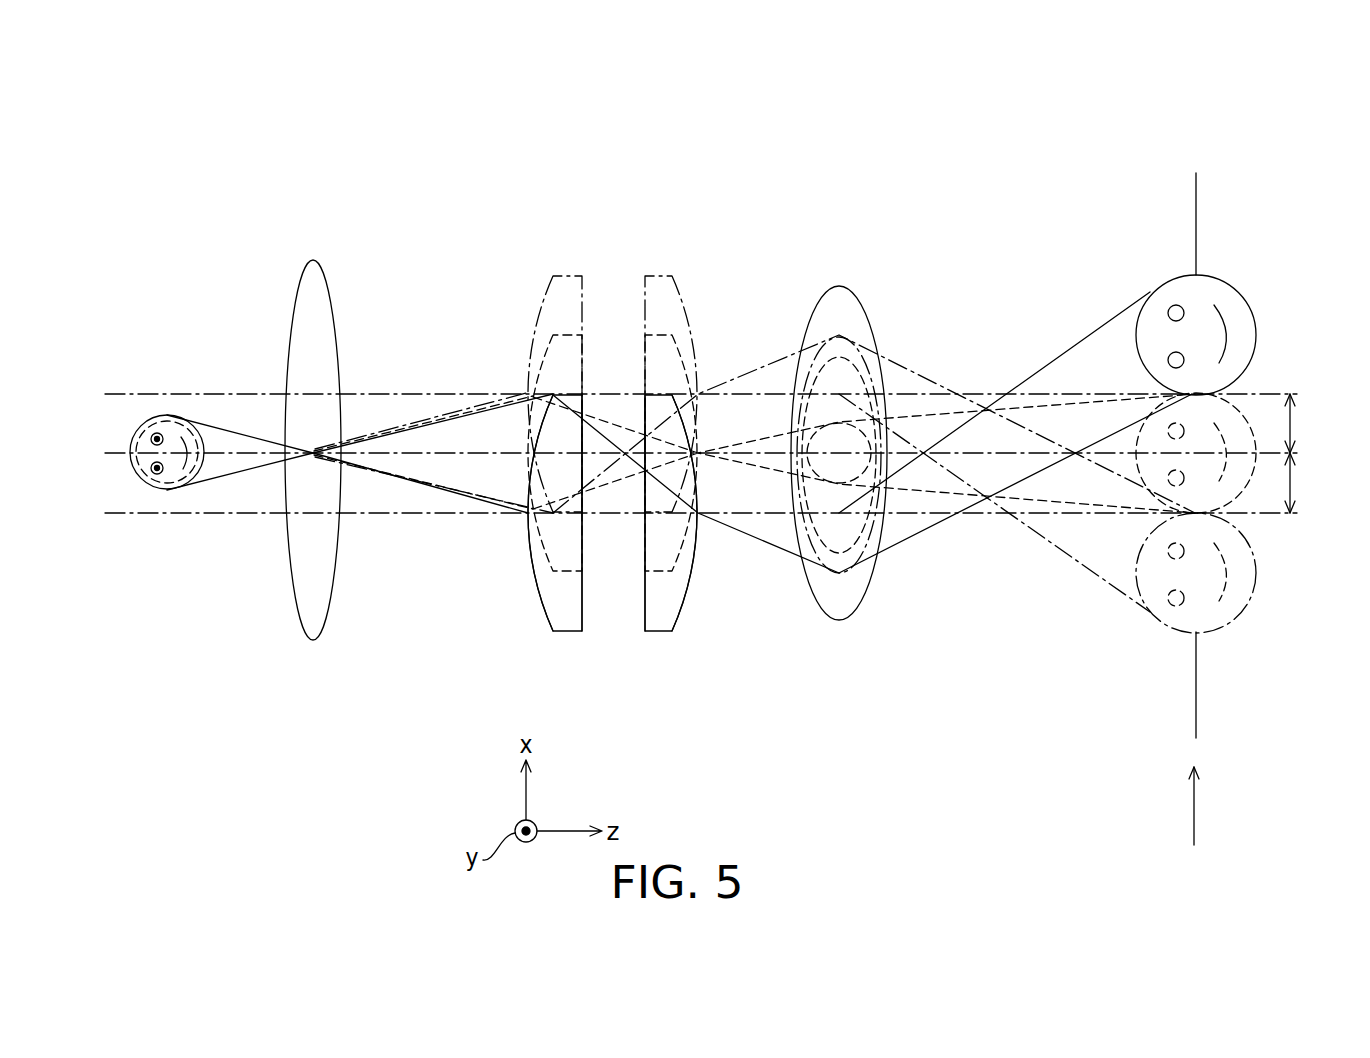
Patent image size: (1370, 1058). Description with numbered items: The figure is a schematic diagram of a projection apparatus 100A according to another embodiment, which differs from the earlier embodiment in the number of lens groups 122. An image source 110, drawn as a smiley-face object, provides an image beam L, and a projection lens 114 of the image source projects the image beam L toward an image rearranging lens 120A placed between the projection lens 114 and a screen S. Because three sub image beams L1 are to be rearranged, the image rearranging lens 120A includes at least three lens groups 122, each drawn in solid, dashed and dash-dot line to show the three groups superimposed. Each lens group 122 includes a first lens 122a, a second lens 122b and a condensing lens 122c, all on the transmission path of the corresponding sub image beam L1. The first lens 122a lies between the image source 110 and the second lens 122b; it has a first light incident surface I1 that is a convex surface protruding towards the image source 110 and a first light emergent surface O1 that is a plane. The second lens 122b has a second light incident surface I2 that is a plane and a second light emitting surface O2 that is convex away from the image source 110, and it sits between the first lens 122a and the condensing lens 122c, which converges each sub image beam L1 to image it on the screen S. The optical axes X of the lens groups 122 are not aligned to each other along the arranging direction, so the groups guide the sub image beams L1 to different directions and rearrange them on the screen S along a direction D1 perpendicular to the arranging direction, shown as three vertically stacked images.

The image source 110 is at (323, 130).
The projection lens 114 is at (311, 258).
The image rearranging lens 120A is at (747, 122).
The lens groups 122 is at (818, 184).
The first lens 122a is at (567, 292).
The second lens 122b is at (662, 292).
The condensing lens 122c is at (836, 287).
The first light incident surface I1 is at (535, 305).
The first light emergent surface O1 is at (583, 305).
The second light incident surface I2 is at (635, 306).
The second light emitting surface O2 is at (683, 302).
The image beam L is at (490, 326).
The sub image beams L1 is at (402, 430).
The screen S is at (1197, 223).
The optical axes X is at (1280, 393).
The projection apparatus 100A is at (1260, 749).
The direction D1 is at (1210, 806).